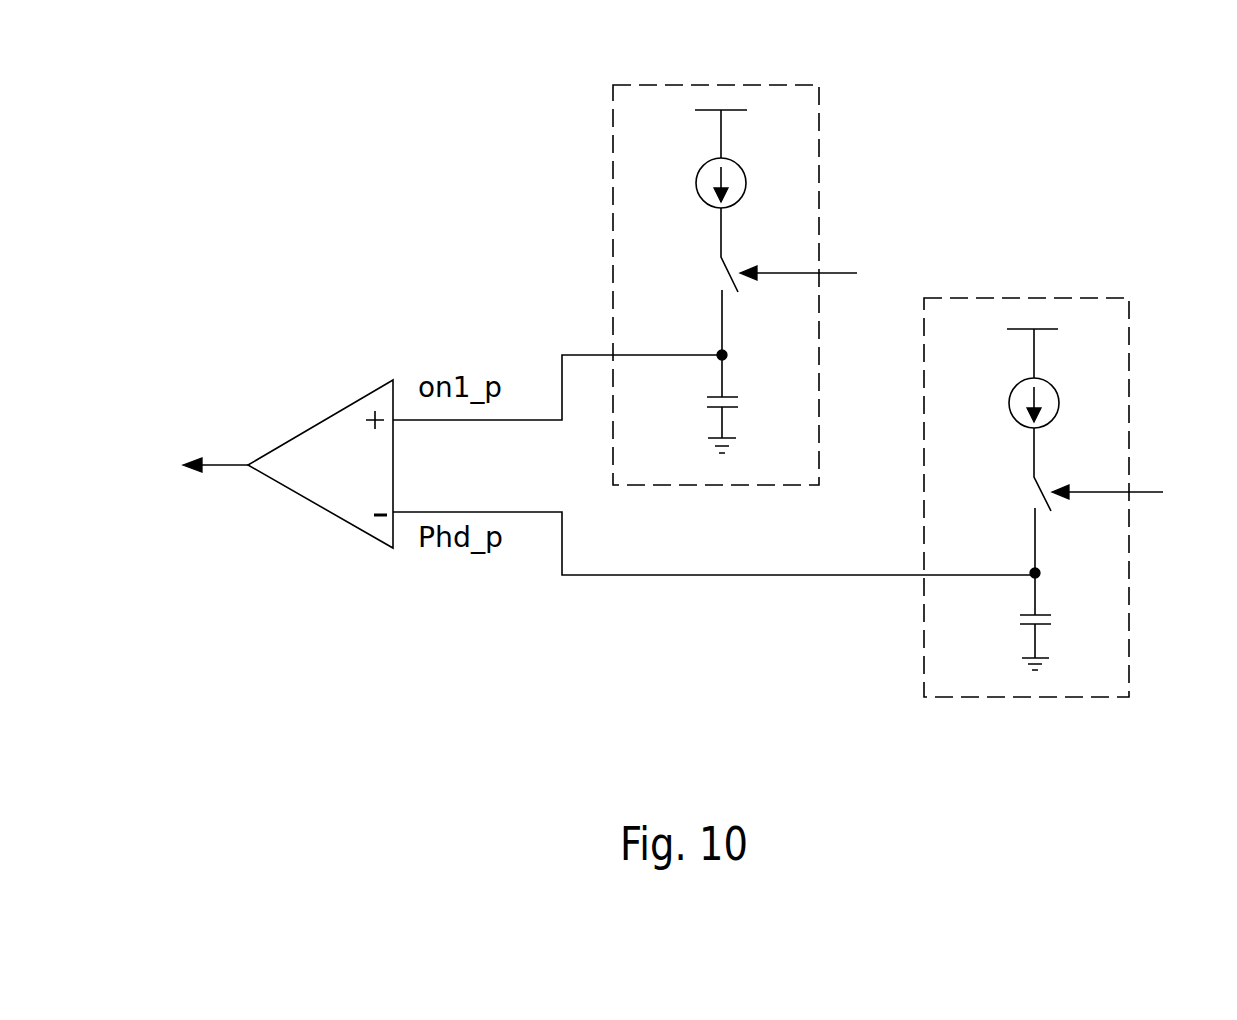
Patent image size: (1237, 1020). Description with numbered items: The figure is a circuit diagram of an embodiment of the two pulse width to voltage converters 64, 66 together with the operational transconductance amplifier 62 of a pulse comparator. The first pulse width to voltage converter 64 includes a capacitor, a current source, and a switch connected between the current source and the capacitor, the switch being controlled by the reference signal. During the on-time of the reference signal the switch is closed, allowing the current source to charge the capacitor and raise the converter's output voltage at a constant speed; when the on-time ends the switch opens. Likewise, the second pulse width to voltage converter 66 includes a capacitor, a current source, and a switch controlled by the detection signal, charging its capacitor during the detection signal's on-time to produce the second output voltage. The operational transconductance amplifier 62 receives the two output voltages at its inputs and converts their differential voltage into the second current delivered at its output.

The operational transconductance amplifier 62 is at (317, 423).
The pulse width to voltage converter 64 is at (710, 85).
The pulse width to voltage converter 66 is at (1023, 298).